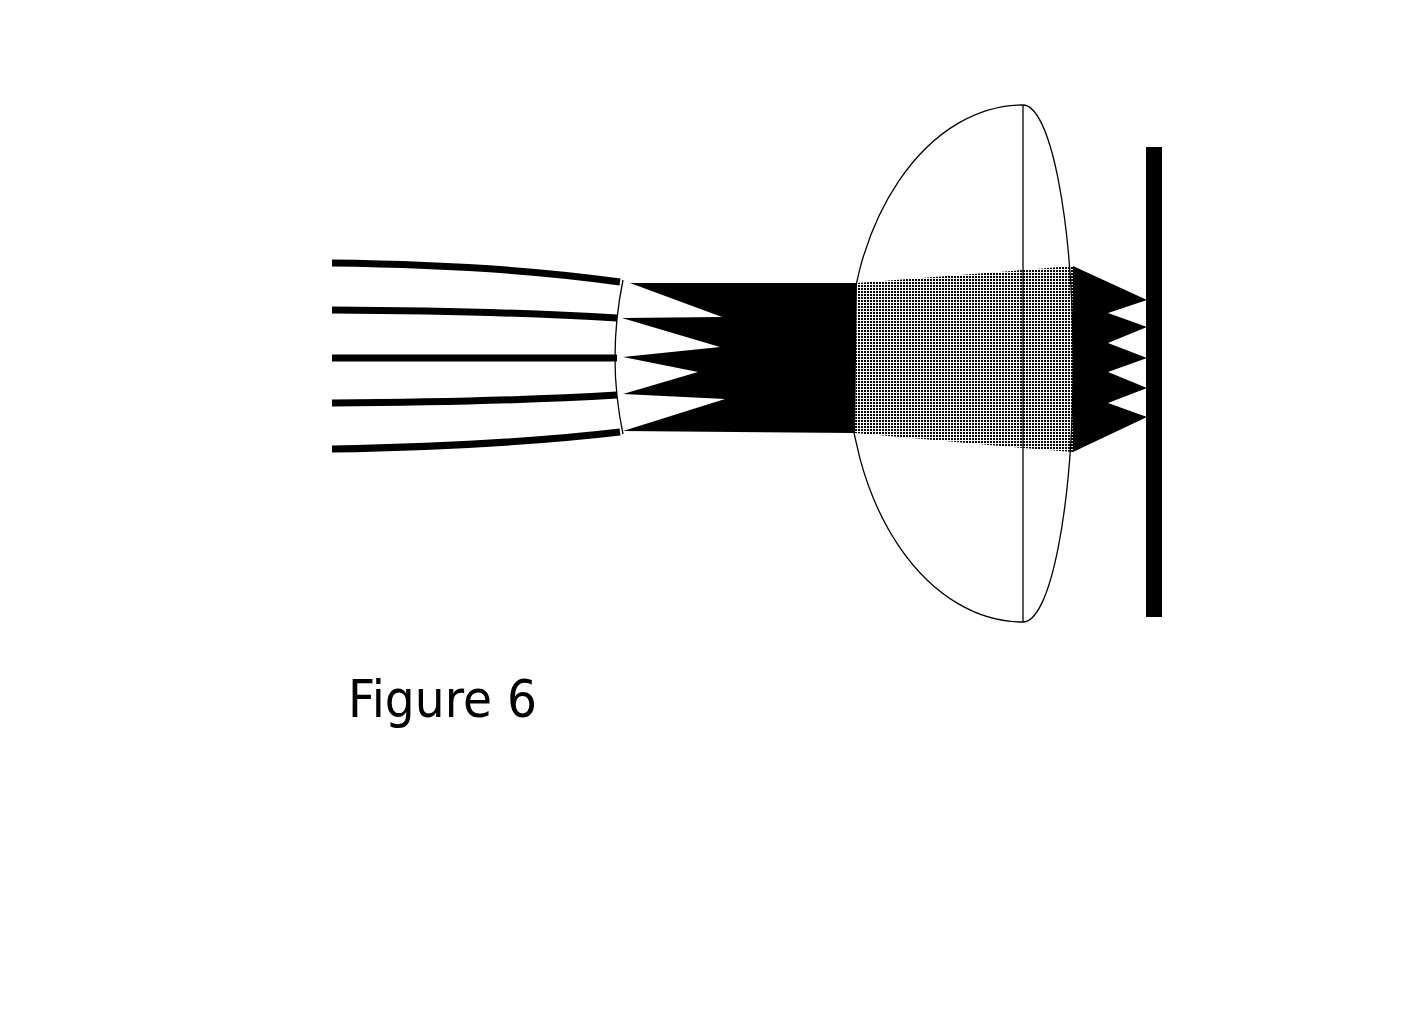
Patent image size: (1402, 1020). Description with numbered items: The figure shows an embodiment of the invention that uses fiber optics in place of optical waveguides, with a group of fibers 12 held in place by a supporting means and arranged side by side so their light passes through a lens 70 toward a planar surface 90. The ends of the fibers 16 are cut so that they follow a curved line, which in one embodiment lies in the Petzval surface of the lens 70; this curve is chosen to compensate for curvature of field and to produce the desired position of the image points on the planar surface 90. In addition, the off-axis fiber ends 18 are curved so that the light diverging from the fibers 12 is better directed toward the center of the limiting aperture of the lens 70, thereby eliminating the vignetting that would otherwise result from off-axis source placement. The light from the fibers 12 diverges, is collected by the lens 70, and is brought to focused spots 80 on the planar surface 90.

The fibers 12 is at (355, 262).
The ends of the fibers 16 is at (620, 358).
The off-axis fiber ends 18 is at (620, 283).
The lens 70 is at (966, 608).
The focused light spot 80 is at (1162, 283).
The planar surface 90 is at (1162, 585).